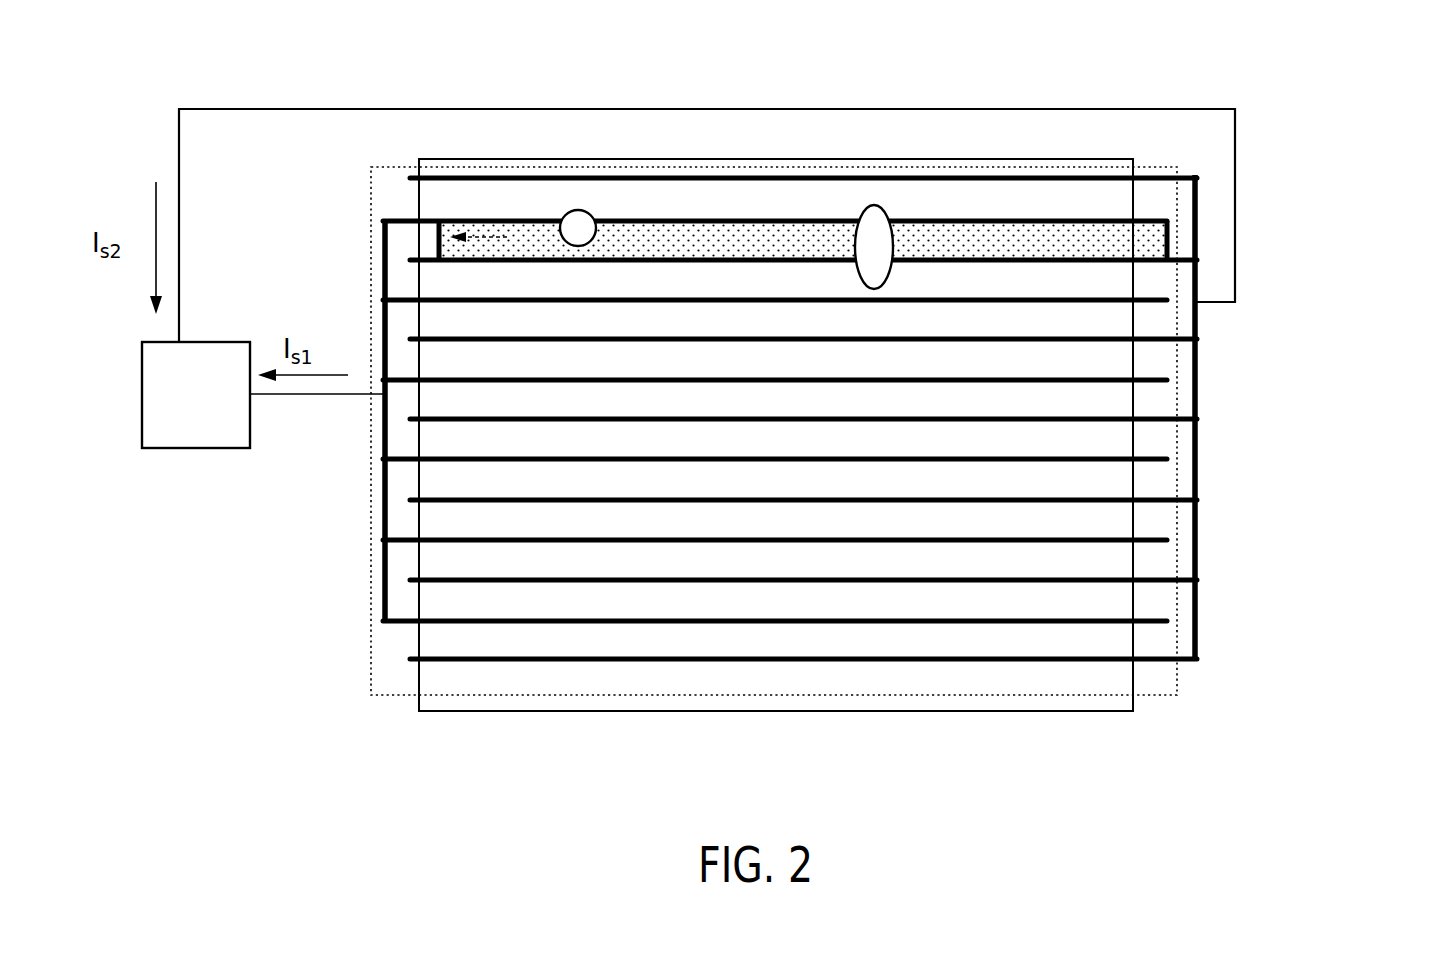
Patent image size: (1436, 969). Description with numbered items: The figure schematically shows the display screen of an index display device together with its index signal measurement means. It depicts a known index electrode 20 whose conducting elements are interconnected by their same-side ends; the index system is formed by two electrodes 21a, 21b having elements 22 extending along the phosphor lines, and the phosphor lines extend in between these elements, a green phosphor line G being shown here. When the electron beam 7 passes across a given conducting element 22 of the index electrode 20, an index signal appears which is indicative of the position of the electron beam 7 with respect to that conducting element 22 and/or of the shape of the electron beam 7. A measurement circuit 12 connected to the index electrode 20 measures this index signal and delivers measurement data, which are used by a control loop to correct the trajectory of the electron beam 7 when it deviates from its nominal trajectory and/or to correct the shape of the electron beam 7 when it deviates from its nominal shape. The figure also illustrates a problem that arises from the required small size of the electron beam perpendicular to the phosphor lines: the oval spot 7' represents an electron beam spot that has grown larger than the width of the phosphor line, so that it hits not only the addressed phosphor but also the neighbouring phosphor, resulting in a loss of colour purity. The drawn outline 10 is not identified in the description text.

The electron beam 7 is at (578, 151).
The oval spot 7' is at (876, 172).
The substrate 10 is at (991, 711).
The measurement circuit 12 is at (196, 395).
The index electrode 20 is at (372, 563).
The first electrode 21a is at (775, 421).
The second electrode 21b is at (1215, 177).
The conducting element 22 is at (693, 219).
The green phosphor line G is at (777, 243).